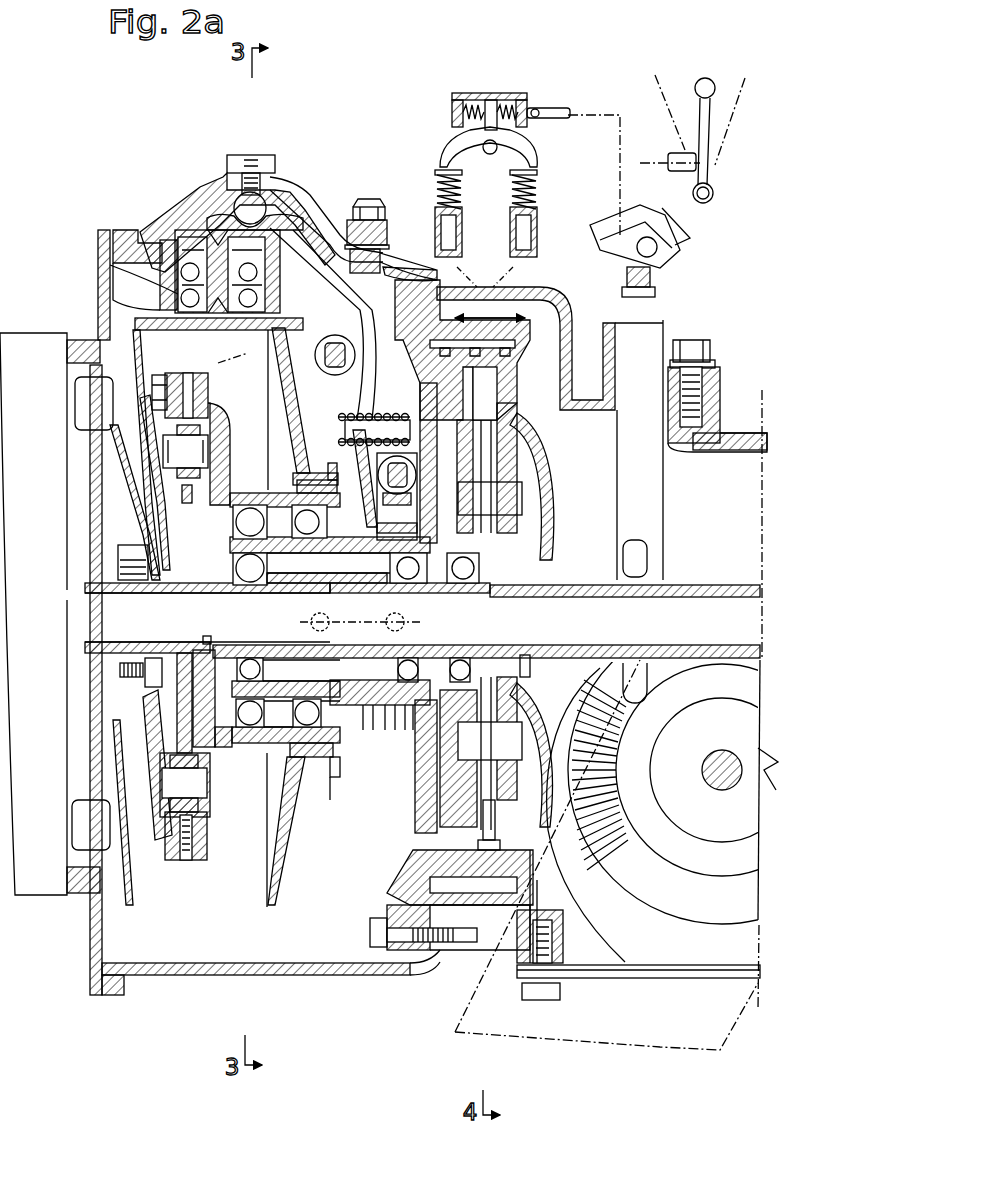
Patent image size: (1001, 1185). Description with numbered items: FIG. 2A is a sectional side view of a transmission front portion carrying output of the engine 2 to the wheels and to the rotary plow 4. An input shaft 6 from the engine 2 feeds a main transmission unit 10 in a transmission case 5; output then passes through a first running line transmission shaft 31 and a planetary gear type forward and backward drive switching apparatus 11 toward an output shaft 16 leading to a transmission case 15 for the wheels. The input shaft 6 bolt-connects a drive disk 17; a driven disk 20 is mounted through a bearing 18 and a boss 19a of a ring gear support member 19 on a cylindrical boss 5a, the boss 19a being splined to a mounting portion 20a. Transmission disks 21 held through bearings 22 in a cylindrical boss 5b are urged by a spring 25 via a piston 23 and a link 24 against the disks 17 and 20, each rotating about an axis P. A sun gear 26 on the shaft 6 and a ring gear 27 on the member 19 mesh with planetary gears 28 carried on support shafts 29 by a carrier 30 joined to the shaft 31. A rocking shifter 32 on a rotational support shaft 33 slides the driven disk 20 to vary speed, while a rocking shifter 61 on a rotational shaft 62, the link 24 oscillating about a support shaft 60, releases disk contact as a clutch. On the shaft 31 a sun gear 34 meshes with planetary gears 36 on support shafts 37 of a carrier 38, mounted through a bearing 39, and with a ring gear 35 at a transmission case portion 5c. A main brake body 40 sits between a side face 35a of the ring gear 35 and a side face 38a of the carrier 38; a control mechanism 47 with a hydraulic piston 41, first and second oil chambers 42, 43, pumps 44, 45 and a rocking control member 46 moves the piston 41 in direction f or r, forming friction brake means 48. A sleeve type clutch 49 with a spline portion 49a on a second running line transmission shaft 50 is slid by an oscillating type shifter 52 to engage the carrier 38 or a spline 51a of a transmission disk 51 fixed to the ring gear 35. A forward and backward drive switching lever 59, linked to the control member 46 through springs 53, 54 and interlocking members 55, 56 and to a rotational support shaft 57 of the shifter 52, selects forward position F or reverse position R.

The engine 2 is at (45, 885).
The rotary plow 4 is at (492, 230).
The transmission case 5 is at (718, 395).
The cylindrical boss of transmission case 5a is at (215, 640).
The cylindrical boss of transmission case 5b is at (165, 282).
The transmission case portion 5c is at (540, 886).
The input shaft 6 is at (95, 572).
The main transmission unit 10 is at (165, 895).
The planetary gear type forward and backward drive switching apparatus 11 is at (660, 500).
The transmission case for the wheels 15 is at (685, 1048).
The output shaft 16 is at (722, 792).
The drive disk 17 is at (125, 885).
The bearing 18 is at (248, 730).
The ring gear support member 19 is at (197, 840).
The boss of ring gear support member 19a is at (335, 770).
The driven disk 20 is at (287, 860).
The mounting portion 20a is at (328, 800).
The transmission disks 21 is at (160, 305).
The bearings 22 is at (110, 270).
The piston 23 is at (197, 232).
The link 24 is at (308, 222).
The spring 25 is at (312, 455).
The sun gear 26 is at (165, 497).
The ring gear 27 is at (190, 870).
The planetary gears 28 is at (178, 420).
The support shaft 29 is at (165, 450).
The carrier 30 is at (210, 800).
The first running line transmission shaft 31 is at (387, 733).
The rocking shifter 32 is at (300, 622).
The rotational support shaft 33 is at (330, 340).
The sun gear 34 is at (510, 577).
The ring gear 35 is at (505, 815).
The side face of ring gear 35a is at (548, 917).
The planetary gears 36 is at (498, 437).
The support shafts 37 is at (555, 470).
The carrier 38 is at (438, 822).
The side face of carrier 38a is at (510, 668).
The bearing 39 is at (432, 652).
The main brake body 40 is at (447, 950).
The hydraulic piston 41 is at (500, 335).
The first oil chamber 42 is at (335, 395).
The second oil chamber 43 is at (585, 385).
The pump 44 is at (537, 232).
The pump 45 is at (437, 222).
The rocking control member 46 is at (450, 150).
The control mechanism 47 is at (540, 153).
The friction brake means 48 is at (495, 915).
The sleeve type clutch 49 is at (655, 565).
The spline portion 49a is at (608, 735).
The second running line transmission shaft 50 is at (700, 585).
The transmission disk 51 is at (573, 523).
The spline 51a is at (545, 665).
The oscillating type shifter 52 is at (690, 645).
The spring 53 is at (455, 115).
The spring 54 is at (527, 108).
The interlocking member 55 is at (478, 93).
The interlocking member 56 is at (690, 222).
The rotational support shaft 57 is at (660, 295).
The forward and backward drive switching lever 59 is at (712, 130).
The support shaft 60 is at (243, 197).
The rocking shifter 61 is at (370, 620).
The rotational shaft 62 is at (410, 473).
The axis P is at (241, 350).
The second position R is at (662, 99).
The first position F is at (737, 108).
The direction r is at (478, 287).
The direction f is at (497, 282).